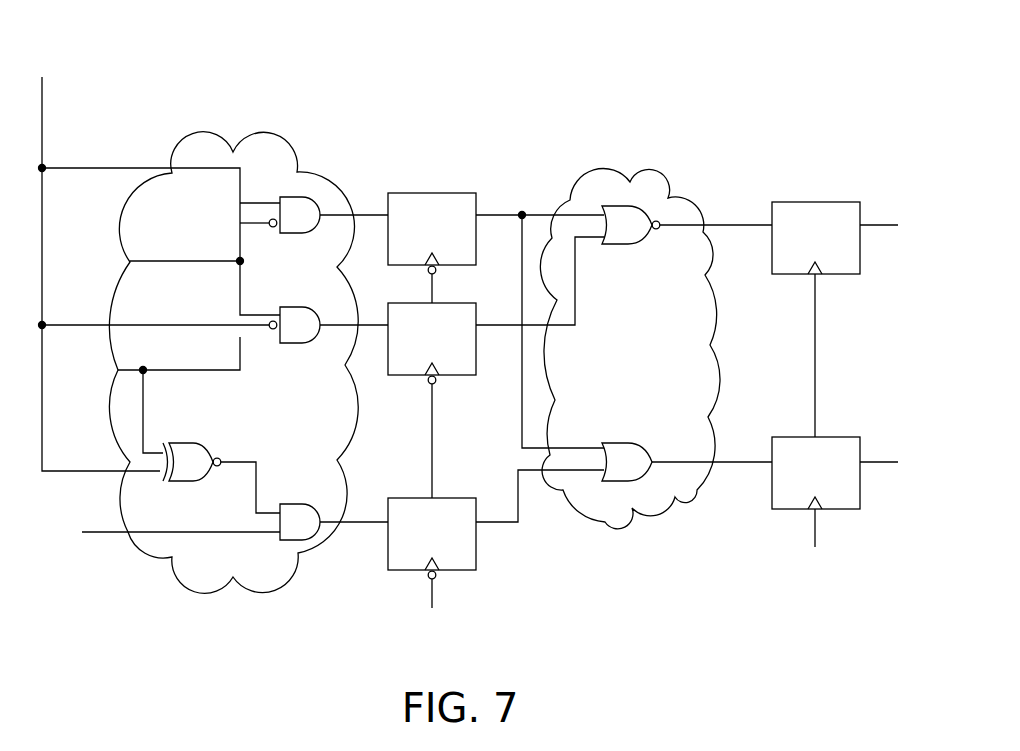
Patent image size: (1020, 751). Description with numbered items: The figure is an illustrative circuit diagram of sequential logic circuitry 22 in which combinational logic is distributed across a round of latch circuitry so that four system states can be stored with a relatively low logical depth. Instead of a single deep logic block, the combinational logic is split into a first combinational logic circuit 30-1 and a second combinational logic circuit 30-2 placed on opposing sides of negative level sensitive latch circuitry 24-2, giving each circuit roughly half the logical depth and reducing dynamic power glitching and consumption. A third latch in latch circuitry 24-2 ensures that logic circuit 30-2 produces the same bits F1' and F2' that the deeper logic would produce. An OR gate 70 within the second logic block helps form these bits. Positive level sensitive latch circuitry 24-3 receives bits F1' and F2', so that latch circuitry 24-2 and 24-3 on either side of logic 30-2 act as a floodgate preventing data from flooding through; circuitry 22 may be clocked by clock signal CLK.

The circuitry 22 is at (133, 617).
The first combinational logic circuit 30-1 is at (258, 593).
The second combinational logic circuit 30-2 is at (607, 523).
The negative level sensitive latch circuitry 24-2 is at (477, 201).
The positive level sensitive latch circuitry 24-3 is at (845, 274).
The OR gate 70 is at (622, 441).